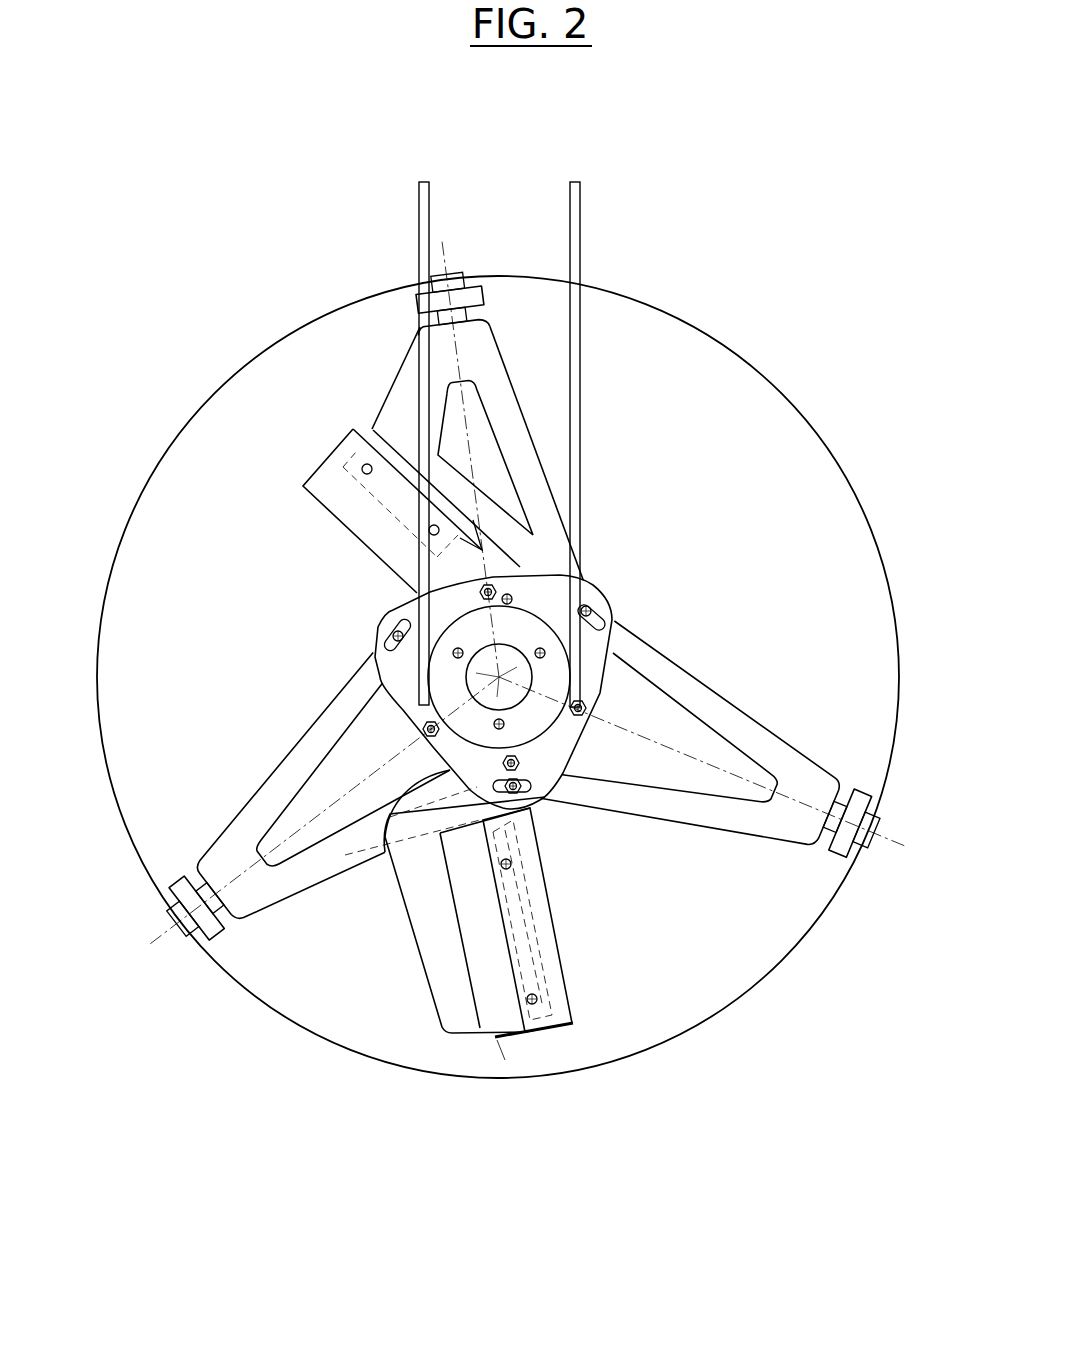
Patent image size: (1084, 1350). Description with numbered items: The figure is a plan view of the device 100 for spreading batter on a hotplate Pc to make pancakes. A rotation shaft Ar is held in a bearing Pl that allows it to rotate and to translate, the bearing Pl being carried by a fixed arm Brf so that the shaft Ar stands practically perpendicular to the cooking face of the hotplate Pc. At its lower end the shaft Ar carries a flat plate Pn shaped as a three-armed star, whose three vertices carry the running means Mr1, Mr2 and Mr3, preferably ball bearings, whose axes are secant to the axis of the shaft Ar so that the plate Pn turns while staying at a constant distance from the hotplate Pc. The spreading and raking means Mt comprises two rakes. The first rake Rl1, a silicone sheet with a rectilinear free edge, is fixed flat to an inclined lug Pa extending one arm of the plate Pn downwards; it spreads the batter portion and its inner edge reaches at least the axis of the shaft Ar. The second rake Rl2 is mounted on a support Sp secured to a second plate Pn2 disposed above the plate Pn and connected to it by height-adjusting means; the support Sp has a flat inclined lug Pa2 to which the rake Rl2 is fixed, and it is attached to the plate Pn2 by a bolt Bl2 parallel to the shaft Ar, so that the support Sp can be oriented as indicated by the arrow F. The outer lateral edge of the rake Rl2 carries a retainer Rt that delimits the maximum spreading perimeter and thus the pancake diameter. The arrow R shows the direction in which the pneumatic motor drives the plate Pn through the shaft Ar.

The device 100 is at (692, 422).
The hotplate Pc is at (738, 1005).
The rotation shaft Ar is at (428, 598).
The bearing Pl is at (472, 673).
The plate Pn is at (720, 662).
The second plate Pn2 is at (612, 624).
The running means Mr1 is at (215, 930).
The running means Mr2 is at (838, 858).
The running means Mr3 is at (480, 298).
The fixed arm Brf is at (418, 228).
The lug Pa is at (340, 467).
The first rake Rl1 is at (300, 486).
The spreading and raking means Mt is at (405, 998).
The support Sp is at (453, 1013).
The second rake Rl2 is at (545, 798).
The bolt Bl2 is at (558, 1000).
The retainer Rt is at (497, 1040).
The flat lug Pa2 is at (483, 913).
The arrow R is at (228, 847).
The arrow F is at (560, 998).